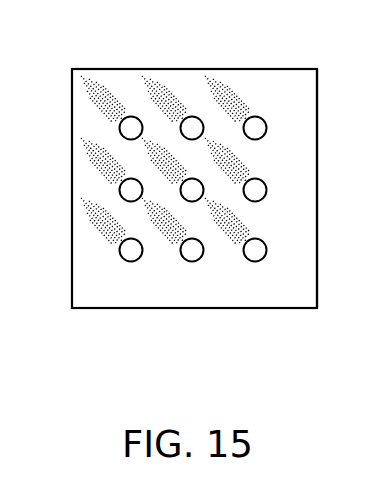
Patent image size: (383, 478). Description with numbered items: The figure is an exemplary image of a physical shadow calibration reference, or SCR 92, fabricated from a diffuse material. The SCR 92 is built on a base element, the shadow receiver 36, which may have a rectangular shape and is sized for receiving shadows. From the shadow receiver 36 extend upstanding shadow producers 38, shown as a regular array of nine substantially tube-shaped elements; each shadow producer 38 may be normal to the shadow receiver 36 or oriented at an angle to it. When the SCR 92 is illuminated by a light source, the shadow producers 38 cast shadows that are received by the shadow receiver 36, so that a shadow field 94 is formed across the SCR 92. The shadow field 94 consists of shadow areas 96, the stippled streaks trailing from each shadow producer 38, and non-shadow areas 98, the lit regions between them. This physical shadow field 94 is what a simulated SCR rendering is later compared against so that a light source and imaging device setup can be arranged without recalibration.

The shadow receiver 36 is at (292, 302).
The shadow producers 38 is at (186, 288).
The physical SCR 92 is at (108, 297).
The shadow field 94 is at (180, 57).
The shadow areas 96 is at (97, 236).
The non-shadow areas 98 is at (112, 207).